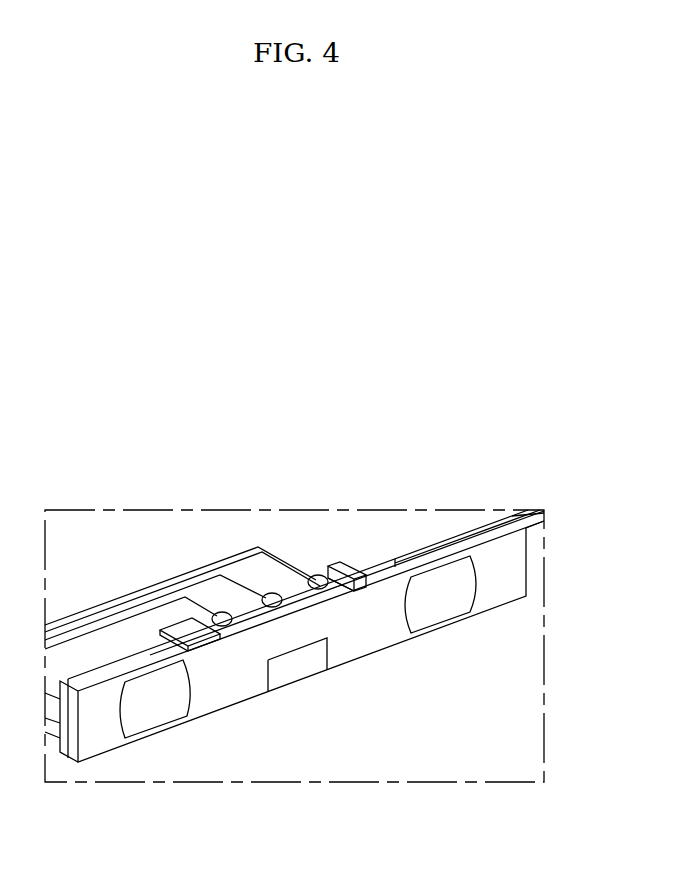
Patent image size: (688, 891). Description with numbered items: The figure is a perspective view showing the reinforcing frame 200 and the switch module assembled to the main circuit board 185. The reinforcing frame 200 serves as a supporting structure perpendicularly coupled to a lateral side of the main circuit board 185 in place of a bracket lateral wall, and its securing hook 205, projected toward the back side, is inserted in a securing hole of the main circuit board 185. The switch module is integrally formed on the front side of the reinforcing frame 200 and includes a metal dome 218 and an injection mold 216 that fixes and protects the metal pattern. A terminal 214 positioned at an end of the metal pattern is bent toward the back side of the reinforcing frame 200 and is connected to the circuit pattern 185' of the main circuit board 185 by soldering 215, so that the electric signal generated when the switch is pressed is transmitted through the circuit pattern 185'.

The circuit pattern 185' is at (182, 596).
The soldering 215 is at (318, 575).
The securing hook 205 is at (352, 561).
The main circuit board 185 is at (464, 510).
The reinforcing frame 200 is at (454, 540).
The injection mold 216 is at (508, 545).
The metal dome 218 is at (470, 587).
The terminal 214 is at (343, 591).